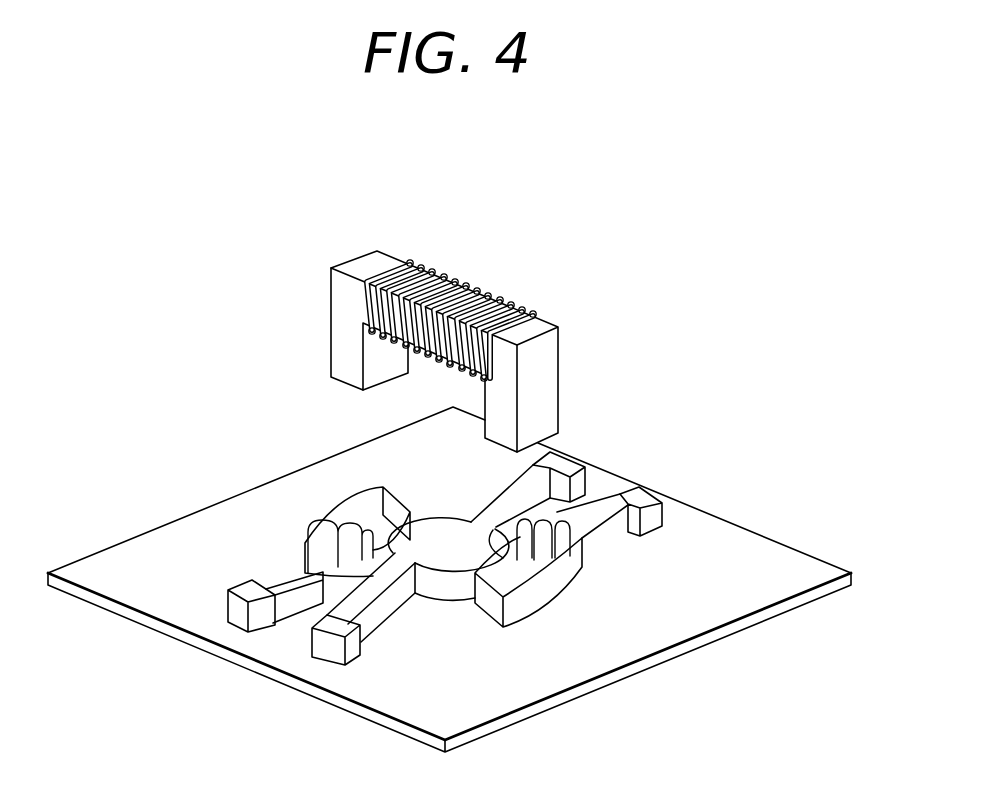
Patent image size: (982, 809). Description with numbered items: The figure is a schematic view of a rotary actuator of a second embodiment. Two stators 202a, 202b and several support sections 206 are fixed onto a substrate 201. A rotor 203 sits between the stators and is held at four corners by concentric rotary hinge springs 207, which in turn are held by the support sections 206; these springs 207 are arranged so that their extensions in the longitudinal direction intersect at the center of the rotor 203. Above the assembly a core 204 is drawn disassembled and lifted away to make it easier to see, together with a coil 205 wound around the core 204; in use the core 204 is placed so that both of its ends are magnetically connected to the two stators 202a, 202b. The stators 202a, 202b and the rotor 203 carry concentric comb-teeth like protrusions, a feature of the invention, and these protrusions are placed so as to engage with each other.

The substrate 201 is at (795, 570).
The stator 202a is at (530, 578).
The stator 202b is at (350, 505).
The rotor 203 is at (457, 556).
The core 204 is at (355, 259).
The coil 205 is at (400, 265).
The support section 206 is at (236, 612).
The concentric rotary hinge spring 207 is at (533, 492).